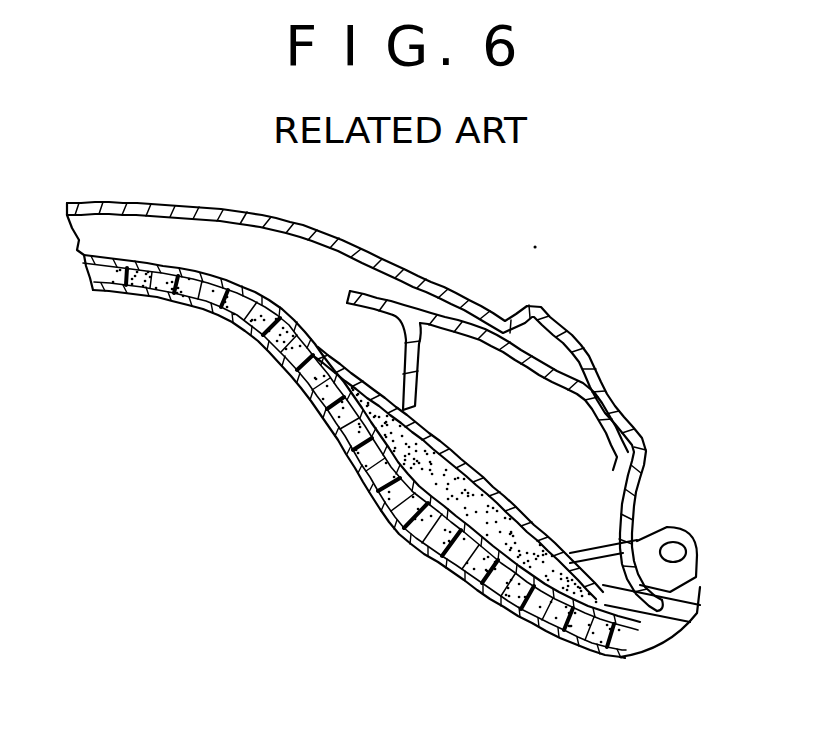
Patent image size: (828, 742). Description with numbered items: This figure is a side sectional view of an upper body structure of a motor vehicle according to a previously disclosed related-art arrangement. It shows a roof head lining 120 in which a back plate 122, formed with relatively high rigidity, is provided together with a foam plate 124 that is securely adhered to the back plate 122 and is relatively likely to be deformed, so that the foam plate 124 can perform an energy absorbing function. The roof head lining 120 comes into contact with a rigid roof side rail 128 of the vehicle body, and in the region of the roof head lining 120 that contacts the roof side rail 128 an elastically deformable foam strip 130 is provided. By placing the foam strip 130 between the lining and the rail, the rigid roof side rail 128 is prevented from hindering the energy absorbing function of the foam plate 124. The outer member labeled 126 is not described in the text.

The roof head lining 120 is at (303, 437).
The back plate 122 is at (287, 311).
The foam plate 124 is at (232, 323).
The outer shell 126 is at (373, 253).
The roof side rail 128 is at (556, 365).
The foam strip 130 is at (487, 507).